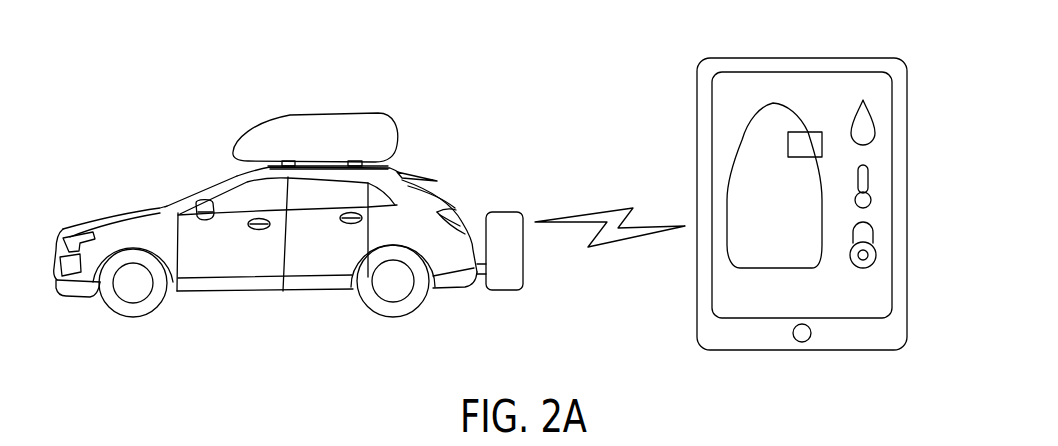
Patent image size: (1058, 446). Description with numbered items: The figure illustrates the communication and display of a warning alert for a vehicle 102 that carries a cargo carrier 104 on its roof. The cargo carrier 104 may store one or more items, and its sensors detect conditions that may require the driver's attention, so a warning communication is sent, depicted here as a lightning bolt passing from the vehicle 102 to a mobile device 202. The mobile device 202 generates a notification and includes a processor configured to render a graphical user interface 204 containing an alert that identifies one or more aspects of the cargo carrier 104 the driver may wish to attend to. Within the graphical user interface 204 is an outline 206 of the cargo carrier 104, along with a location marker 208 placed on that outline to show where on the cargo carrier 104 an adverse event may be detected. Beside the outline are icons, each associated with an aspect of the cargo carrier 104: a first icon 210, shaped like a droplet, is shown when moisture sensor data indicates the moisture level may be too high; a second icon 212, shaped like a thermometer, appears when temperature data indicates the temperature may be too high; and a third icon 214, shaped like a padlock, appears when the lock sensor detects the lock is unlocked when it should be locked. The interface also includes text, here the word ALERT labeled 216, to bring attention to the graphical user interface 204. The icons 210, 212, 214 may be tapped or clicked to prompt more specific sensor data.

The vehicle 102 is at (207, 183).
The cargo carrier 104 is at (335, 110).
The mobile device 202 is at (697, 110).
The graphical user interface 204 is at (817, 92).
The outline 206 is at (747, 130).
The location marker 208 is at (814, 160).
The first icon 210 is at (868, 115).
The second icon 212 is at (870, 192).
The third icon 214 is at (865, 270).
The alert notification 216 is at (758, 298).